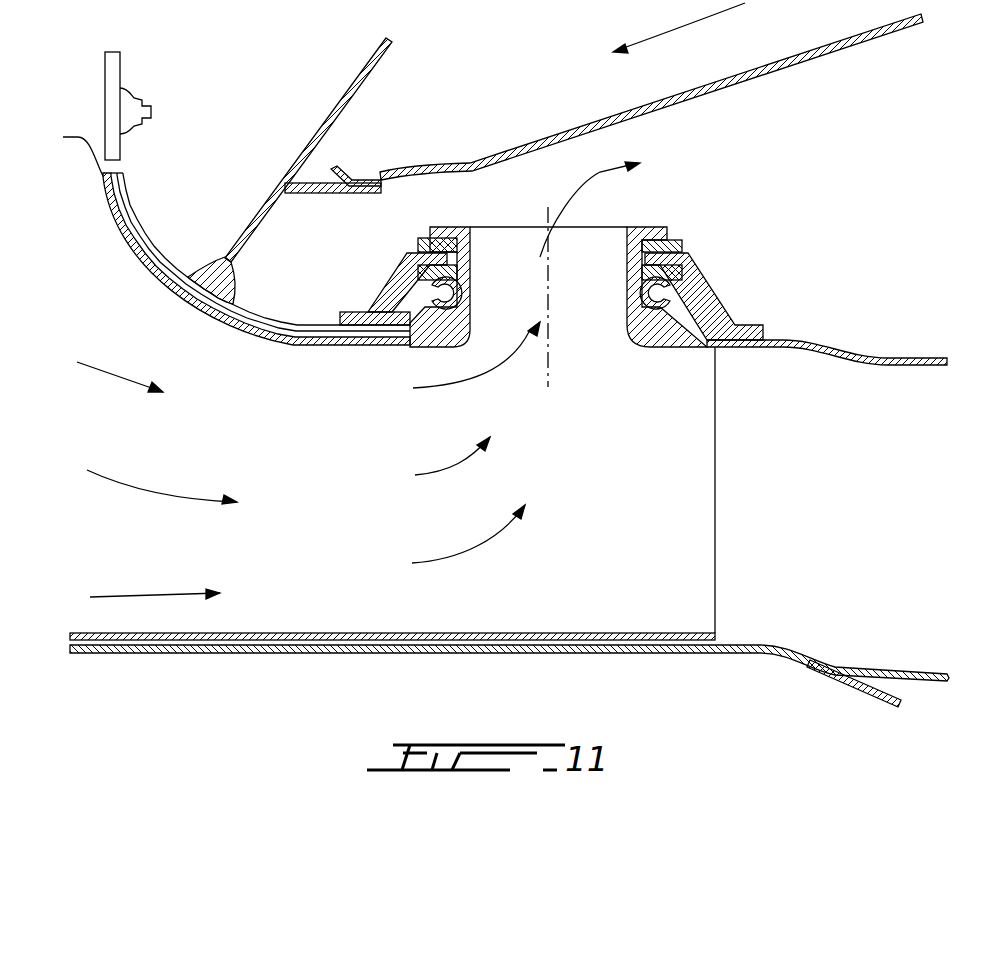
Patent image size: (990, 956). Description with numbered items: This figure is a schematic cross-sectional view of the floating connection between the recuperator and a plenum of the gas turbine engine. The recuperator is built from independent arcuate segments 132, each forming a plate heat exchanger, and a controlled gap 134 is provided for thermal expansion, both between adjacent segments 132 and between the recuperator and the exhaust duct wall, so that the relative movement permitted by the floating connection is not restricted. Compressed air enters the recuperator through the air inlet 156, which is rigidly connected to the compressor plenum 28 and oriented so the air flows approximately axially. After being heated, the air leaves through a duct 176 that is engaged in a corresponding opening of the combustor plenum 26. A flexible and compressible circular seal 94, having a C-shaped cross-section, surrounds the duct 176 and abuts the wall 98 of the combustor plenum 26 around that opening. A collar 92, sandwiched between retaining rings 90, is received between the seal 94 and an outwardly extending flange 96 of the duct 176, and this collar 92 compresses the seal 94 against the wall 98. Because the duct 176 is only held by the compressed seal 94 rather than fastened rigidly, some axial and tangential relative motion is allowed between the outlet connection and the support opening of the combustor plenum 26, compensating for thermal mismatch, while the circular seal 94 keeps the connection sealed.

The air inlet 156 is at (148, 137).
The compressor plenum 28 is at (543, 83).
The duct 176 is at (648, 227).
The retaining rings 90 is at (420, 246).
The collar 92 is at (388, 292).
The outwardly extending flange 96 is at (667, 229).
The circular seal 94 is at (672, 284).
The wall 98 is at (888, 360).
The combustor plenum 26 is at (913, 265).
The arcuate segment 132 is at (715, 497).
The controlled gap 134 is at (212, 637).